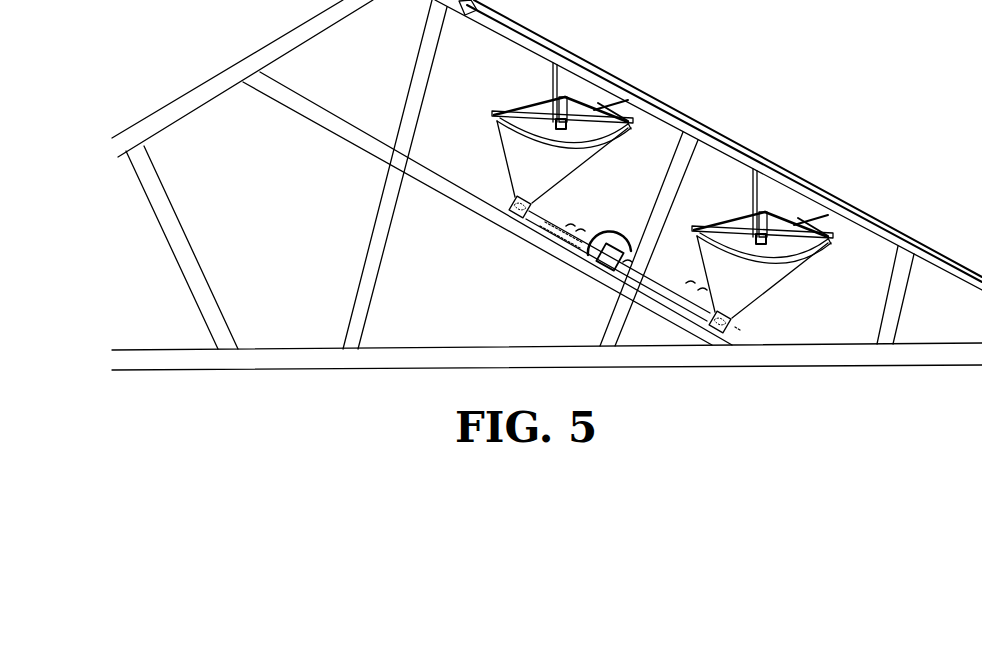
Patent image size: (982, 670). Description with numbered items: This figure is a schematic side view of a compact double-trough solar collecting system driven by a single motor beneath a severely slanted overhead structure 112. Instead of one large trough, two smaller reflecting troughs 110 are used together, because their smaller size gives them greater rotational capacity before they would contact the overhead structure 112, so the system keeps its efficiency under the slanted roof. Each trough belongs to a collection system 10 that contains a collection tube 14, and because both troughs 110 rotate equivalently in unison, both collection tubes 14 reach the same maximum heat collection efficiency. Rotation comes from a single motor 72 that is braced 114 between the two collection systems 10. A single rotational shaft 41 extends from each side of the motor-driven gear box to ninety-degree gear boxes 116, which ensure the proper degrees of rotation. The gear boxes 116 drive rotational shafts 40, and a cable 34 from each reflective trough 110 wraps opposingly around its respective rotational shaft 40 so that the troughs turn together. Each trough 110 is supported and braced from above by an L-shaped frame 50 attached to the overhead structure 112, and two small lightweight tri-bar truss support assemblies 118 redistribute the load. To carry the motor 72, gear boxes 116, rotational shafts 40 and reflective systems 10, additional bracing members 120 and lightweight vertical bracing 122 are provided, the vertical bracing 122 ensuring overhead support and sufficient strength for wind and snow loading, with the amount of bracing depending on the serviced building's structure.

The collection system 10 is at (587, 92).
The collection tube 14 is at (521, 111).
The cable 34 is at (505, 163).
The rotational shaft 40 is at (512, 217).
The single rotational shaft 41 is at (545, 217).
The L-shaped frame 50 is at (560, 78).
The motor 72 is at (615, 245).
The reflecting trough 110 is at (590, 147).
The overhead structure 112 is at (662, 111).
The brace 114 is at (597, 237).
The 90° gear box 116 is at (523, 195).
The tri-bar truss support assembly 118 is at (543, 92).
The bracing member 120 is at (306, 117).
The vertical bracing 122 is at (419, 53).